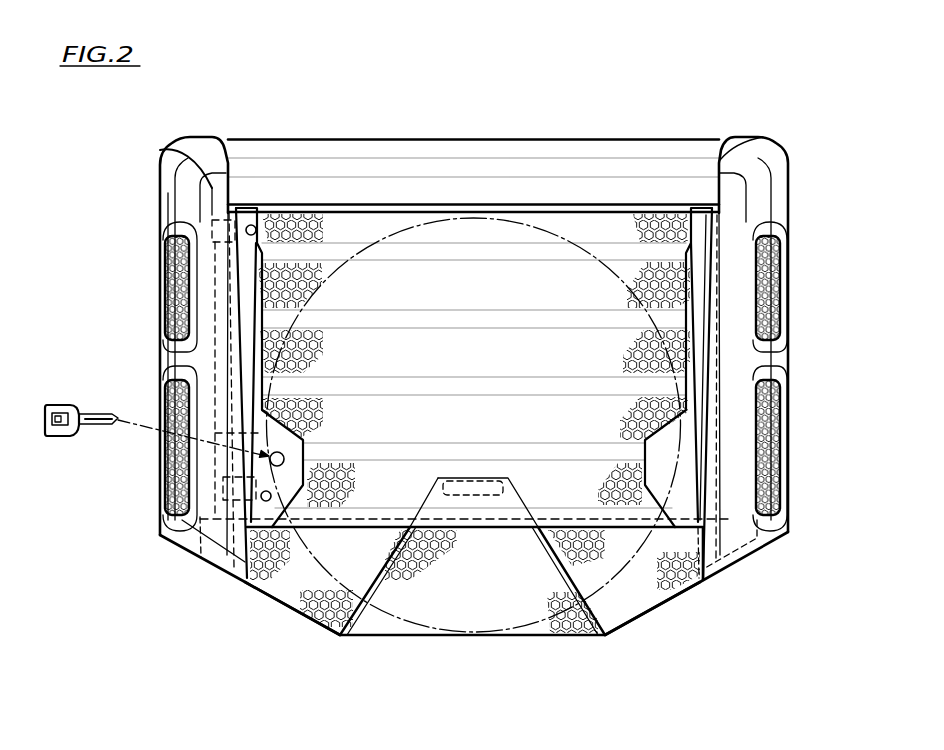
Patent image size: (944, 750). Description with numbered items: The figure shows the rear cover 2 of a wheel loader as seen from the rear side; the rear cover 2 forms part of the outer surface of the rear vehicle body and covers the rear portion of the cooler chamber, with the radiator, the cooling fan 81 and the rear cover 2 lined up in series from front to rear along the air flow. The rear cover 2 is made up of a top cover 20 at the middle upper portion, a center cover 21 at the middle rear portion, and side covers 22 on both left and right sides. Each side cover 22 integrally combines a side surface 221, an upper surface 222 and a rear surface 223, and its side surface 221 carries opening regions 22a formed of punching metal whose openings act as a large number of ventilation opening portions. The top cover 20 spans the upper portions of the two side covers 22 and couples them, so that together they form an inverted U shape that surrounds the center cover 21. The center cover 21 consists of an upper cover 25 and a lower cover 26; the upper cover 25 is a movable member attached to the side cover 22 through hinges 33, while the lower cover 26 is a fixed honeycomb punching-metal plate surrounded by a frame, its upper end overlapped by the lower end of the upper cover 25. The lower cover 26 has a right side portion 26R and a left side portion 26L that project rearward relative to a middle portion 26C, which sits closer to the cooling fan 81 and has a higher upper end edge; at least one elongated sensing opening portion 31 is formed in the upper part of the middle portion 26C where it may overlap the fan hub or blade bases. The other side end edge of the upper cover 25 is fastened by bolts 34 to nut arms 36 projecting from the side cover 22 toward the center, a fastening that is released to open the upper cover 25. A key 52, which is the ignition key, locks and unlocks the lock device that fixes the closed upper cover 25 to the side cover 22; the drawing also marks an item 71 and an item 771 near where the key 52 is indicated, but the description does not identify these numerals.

The rear cover 2 is at (776, 104).
The top cover 20 is at (418, 139).
The center cover 21 is at (742, 630).
The side covers 22 is at (790, 190).
The opening region 22a is at (164, 272).
The upper cover 25 is at (687, 578).
The lower cover 26 is at (640, 614).
The left side portion 26L is at (315, 613).
The middle portion 26C is at (408, 633).
The right side portion 26R is at (628, 630).
The sensing opening portion 31 is at (482, 497).
The hinges 33 is at (712, 207).
The bolts 34 is at (258, 215).
The nut arms 36 is at (247, 207).
The key 52 is at (60, 404).
The lock 71 is at (270, 464).
The cooling fan 81 is at (530, 633).
The side surface 221 is at (168, 193).
The upper surface 222 is at (203, 142).
The rear surface 223 is at (210, 188).
The lock hole 771 is at (277, 467).